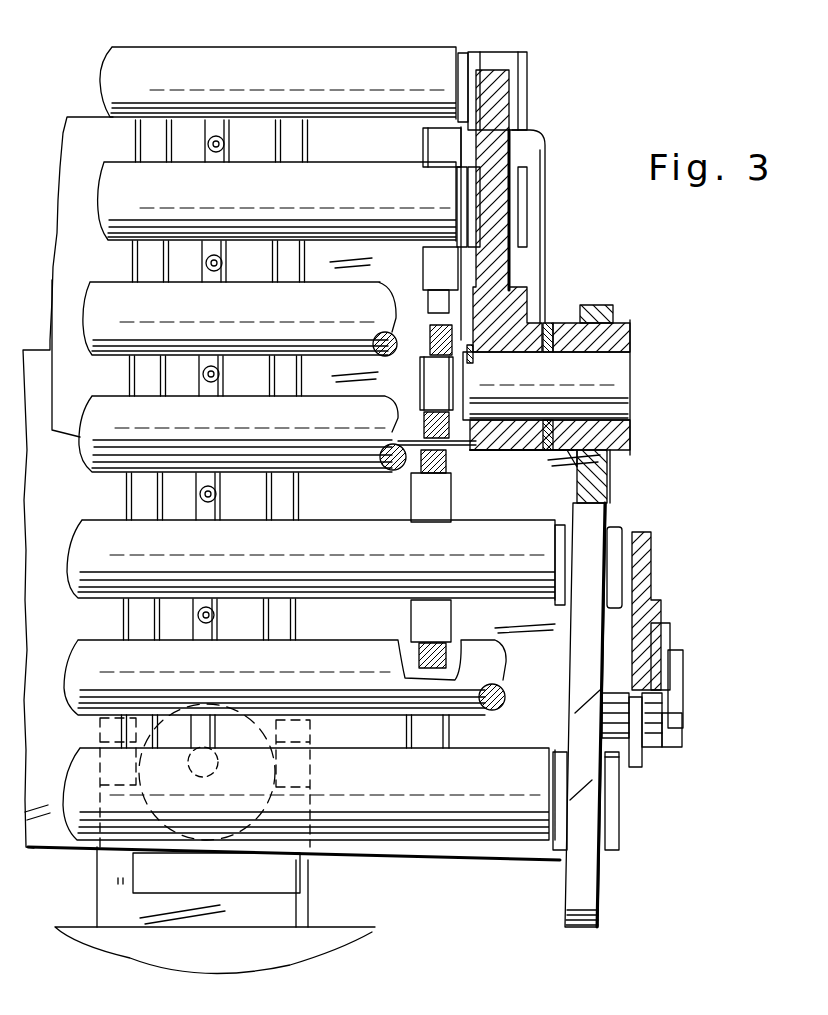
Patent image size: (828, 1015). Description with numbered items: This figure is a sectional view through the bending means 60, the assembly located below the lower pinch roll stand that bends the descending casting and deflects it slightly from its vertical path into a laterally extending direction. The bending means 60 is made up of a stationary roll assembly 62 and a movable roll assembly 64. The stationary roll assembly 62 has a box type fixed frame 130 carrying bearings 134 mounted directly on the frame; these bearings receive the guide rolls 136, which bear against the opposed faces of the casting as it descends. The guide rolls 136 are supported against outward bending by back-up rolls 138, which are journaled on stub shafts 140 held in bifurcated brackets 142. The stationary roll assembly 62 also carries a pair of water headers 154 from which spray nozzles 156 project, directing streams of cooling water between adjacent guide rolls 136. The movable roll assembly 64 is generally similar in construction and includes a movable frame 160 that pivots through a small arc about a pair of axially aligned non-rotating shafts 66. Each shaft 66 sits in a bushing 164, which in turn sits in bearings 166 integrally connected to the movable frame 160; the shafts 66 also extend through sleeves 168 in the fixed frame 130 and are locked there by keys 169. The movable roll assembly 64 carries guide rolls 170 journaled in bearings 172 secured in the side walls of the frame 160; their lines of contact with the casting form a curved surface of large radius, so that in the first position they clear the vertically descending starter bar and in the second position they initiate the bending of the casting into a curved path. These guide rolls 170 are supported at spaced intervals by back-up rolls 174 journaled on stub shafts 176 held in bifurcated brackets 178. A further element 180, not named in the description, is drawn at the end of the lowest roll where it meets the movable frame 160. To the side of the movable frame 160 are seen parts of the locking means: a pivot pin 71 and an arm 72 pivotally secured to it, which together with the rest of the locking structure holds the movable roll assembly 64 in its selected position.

The bending means 60 is at (550, 88).
The stationary roll assembly 62 is at (555, 224).
The movable roll assembly 64 is at (615, 508).
The non-rotating shafts 66 is at (618, 380).
The pivot pins 71 is at (680, 678).
The arms 72 is at (645, 560).
The box type fixed frame 130 is at (491, 143).
The bearings 134 is at (522, 245).
The guide rolls 136 is at (266, 203).
The back-up rolls 138 is at (430, 267).
The stub shafts 140 is at (426, 393).
The bifurcated brackets 142 is at (419, 353).
The water headers 154 is at (228, 152).
The spray nozzles 156 is at (213, 152).
The movable frame 160 is at (600, 474).
The bushing 164 is at (627, 423).
The bearings 166 is at (620, 337).
The sleeves 168 is at (527, 453).
The keys 169 is at (470, 357).
The guide rolls 170 is at (276, 559).
The bearings 172 is at (560, 540).
The back-up rolls 174 is at (428, 483).
The stub shafts 176 is at (428, 613).
The bifurcated brackets 178 is at (296, 147).
The collar 180 is at (563, 757).